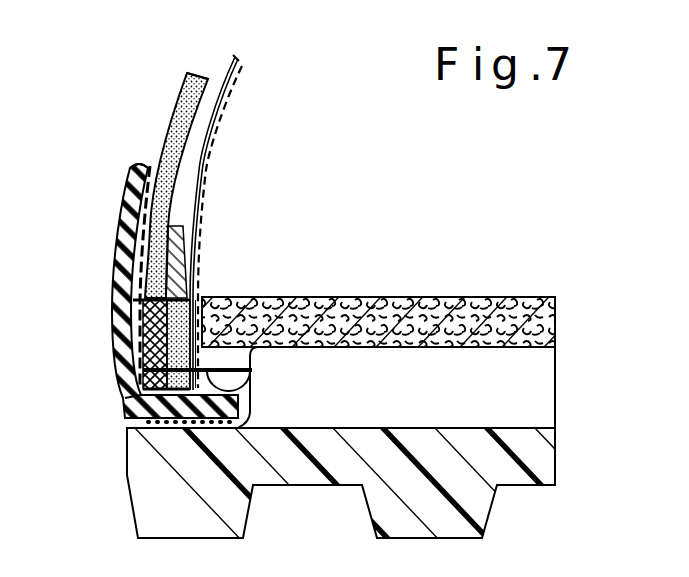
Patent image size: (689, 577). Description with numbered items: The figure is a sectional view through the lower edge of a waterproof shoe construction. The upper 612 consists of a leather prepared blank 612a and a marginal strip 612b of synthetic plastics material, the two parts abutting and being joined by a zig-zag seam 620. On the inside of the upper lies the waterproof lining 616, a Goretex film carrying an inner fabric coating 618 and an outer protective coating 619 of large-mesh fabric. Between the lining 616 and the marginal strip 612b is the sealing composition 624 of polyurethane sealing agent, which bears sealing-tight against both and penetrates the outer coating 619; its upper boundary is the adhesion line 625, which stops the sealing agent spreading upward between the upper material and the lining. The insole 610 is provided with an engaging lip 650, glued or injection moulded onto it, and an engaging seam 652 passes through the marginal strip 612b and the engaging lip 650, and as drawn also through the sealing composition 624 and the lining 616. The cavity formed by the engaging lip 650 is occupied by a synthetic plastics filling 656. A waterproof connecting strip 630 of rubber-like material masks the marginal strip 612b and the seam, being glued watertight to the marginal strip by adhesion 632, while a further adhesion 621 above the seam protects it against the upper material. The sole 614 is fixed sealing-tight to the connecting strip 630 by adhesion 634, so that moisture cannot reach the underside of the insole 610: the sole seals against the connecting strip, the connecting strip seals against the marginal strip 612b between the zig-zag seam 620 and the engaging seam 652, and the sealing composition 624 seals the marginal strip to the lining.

The insole 610 is at (492, 296).
The upper 612 is at (184, 86).
The prepared blank 612a is at (176, 128).
The marginal strip 612b is at (121, 352).
The sole 614 is at (128, 485).
The lining 616 is at (242, 62).
The inner fabric coating 618 is at (234, 99).
The outer protective coating 619 is at (228, 72).
The zig-zag seam 620 is at (120, 307).
The adhesion 621 is at (149, 162).
The sealing composition 624 is at (200, 293).
The adhesion line 625 is at (200, 193).
The connecting strip 630 is at (121, 244).
The adhesion 632 is at (123, 392).
The adhesion 634 is at (140, 422).
The engaging lip 650 is at (219, 360).
The engaging seam 652 is at (257, 353).
The filling 656 is at (538, 378).